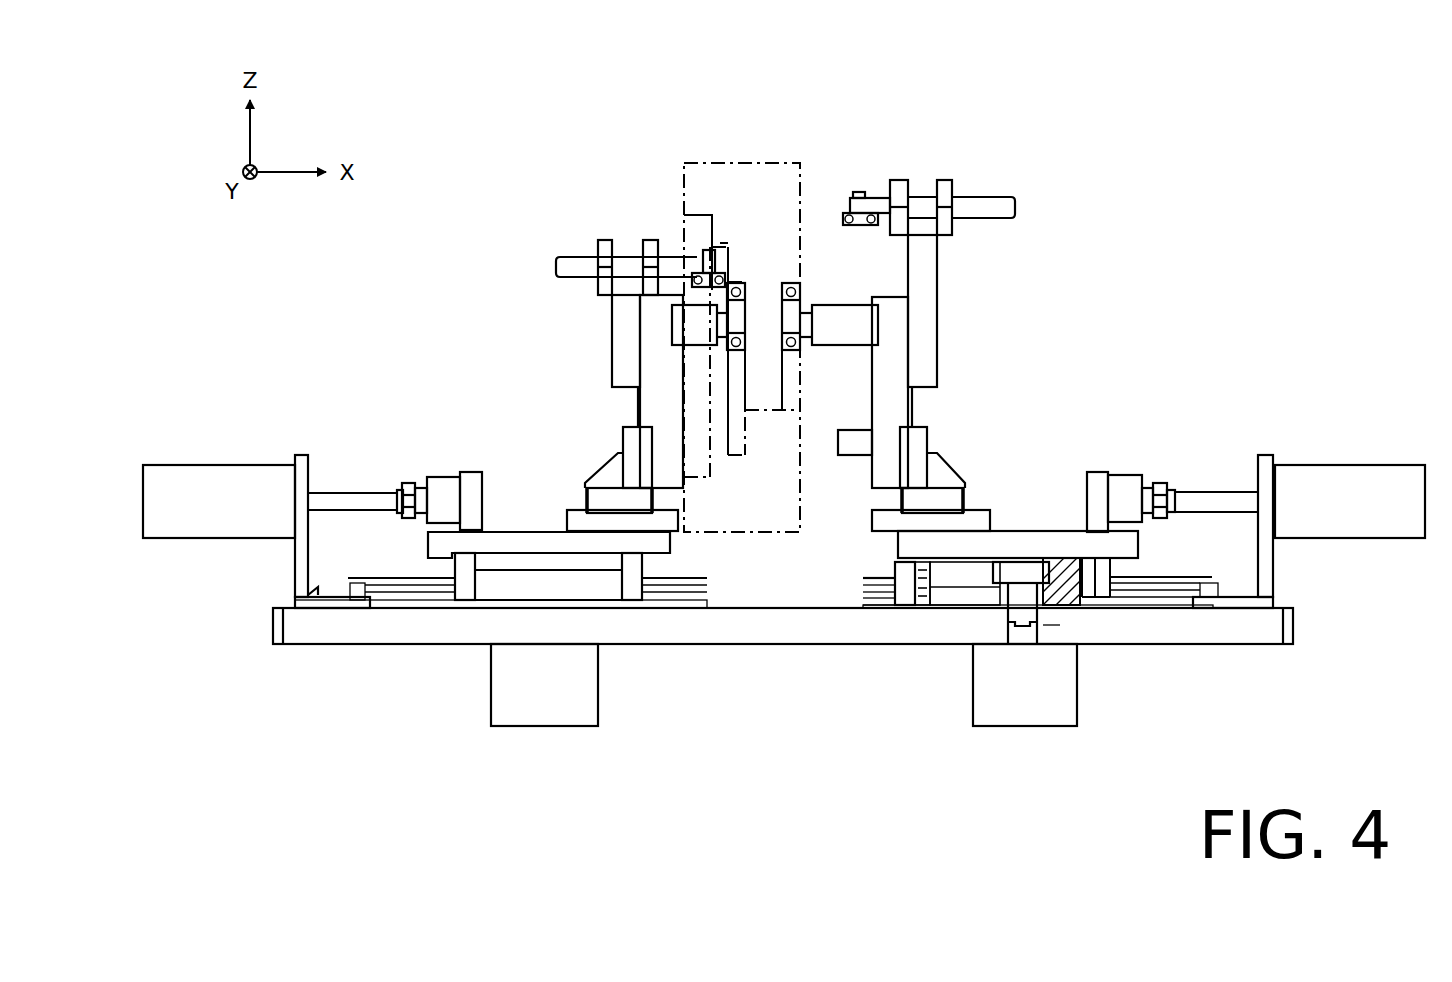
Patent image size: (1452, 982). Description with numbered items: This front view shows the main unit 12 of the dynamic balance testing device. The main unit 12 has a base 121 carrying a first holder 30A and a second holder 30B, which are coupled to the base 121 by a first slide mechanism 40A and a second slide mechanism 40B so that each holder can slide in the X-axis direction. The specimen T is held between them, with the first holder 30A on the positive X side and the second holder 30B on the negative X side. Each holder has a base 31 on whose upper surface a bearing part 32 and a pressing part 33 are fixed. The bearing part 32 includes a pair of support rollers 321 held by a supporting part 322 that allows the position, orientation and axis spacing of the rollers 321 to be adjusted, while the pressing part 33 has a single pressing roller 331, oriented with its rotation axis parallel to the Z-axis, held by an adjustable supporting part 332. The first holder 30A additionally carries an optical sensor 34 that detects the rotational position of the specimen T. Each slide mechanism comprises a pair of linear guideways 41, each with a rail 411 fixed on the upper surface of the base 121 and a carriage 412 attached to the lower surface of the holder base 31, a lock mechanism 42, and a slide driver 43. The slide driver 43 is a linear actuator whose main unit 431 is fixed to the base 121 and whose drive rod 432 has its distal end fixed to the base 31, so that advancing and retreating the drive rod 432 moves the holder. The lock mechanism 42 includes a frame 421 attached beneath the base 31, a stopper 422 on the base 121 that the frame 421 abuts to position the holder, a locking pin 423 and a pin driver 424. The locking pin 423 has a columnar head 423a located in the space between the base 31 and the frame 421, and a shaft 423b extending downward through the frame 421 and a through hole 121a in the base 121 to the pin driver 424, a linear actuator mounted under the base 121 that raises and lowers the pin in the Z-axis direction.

The main unit 12 is at (1236, 168).
The base 121 is at (1193, 647).
The through hole 121a is at (1053, 630).
The specimen T is at (702, 165).
The first holder 30A is at (928, 166).
The second holder 30B is at (604, 210).
The base 31 is at (1042, 530).
The bearing part 32 is at (784, 211).
The rollers 321 is at (790, 283).
The supporting part 322 is at (843, 305).
The pressing part 33 is at (946, 268).
The roller 331 is at (873, 225).
The supporting part 332 is at (985, 220).
The optical sensor 34 is at (858, 430).
The first slide mechanism 40A is at (1332, 388).
The second slide mechanism 40B is at (252, 414).
The linear guideway 41 is at (571, 570).
The rail 411 is at (698, 590).
The carriage 412 is at (640, 557).
The lock mechanism 42 is at (933, 675).
The frame 421 is at (907, 602).
The stopper 422 is at (950, 600).
The locking pin 423 is at (925, 665).
The head 423a is at (1003, 600).
The shaft 423b is at (990, 600).
The pin driver 424 is at (1013, 715).
The slide driver 43 is at (1218, 437).
The main unit 431 is at (1350, 465).
The drive rod 432 is at (1238, 490).